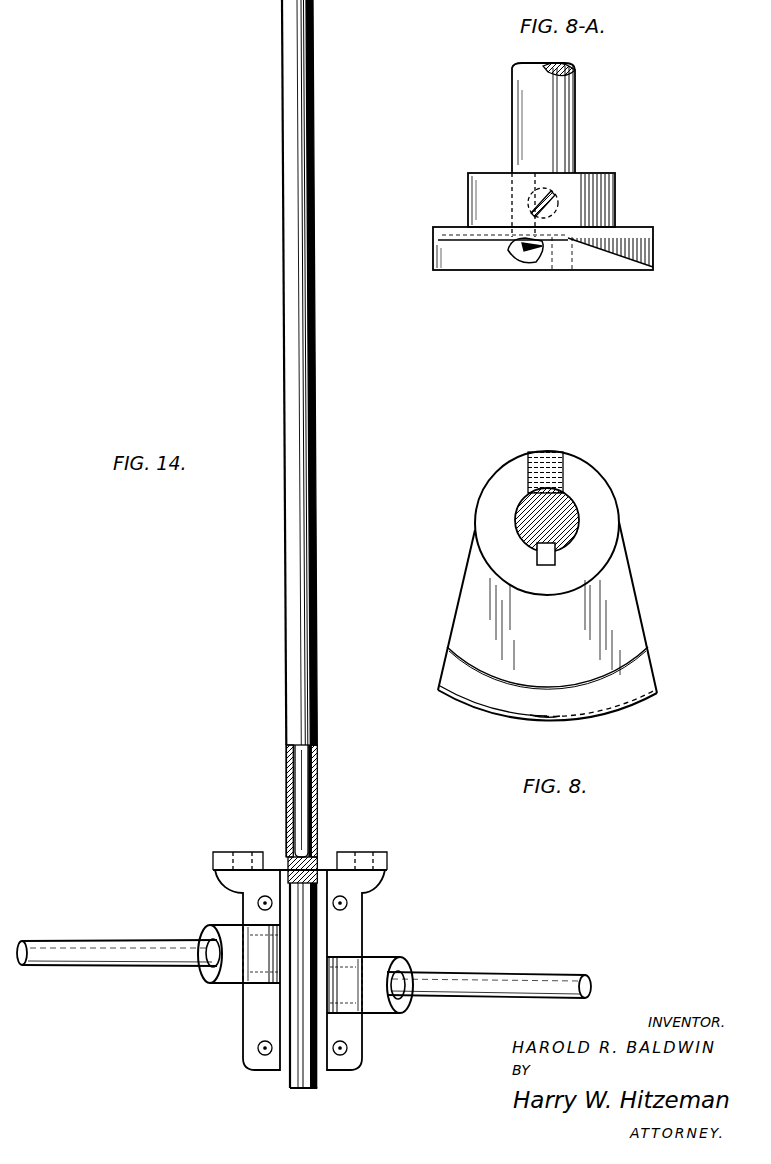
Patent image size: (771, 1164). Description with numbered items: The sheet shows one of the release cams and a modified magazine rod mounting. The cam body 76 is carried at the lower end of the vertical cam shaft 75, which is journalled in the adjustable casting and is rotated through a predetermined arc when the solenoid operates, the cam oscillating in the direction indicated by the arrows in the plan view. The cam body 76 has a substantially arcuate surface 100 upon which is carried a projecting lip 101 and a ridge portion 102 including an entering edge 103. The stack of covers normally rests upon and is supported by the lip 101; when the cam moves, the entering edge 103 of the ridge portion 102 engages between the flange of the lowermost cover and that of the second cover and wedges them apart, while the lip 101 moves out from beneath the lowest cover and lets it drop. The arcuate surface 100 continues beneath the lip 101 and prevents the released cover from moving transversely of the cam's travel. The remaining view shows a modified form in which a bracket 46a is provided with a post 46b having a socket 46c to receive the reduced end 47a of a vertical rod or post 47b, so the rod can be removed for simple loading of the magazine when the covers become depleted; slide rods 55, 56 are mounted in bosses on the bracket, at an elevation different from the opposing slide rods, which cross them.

In FIG. 14, the vertical rod or post 47b is at (305, 627).
In FIG. 14, the reduced end 47a is at (303, 775).
In FIG. 14, the bracket 46a is at (353, 930).
In FIG. 14, the post 46b is at (318, 810).
In FIG. 14, the socket 46c is at (290, 795).
In FIG. 14, the slide rod 55 is at (100, 960).
In FIG. 14, the slide rod 56 is at (507, 978).
In FIG. 8-A, the vertical cam shaft 75 is at (573, 104).
In FIG. 8, the vertical cam shaft 75 is at (567, 522).
In FIG. 8, the cam body 76 is at (617, 595).
In FIG. 8-A, the arcuate surface 100 is at (465, 262).
In FIG. 8, the arcuate surface 100 is at (478, 715).
In FIG. 8-A, the projecting lip 101 is at (515, 242).
In FIG. 8, the projecting lip 101 is at (517, 715).
In FIG. 8-A, the ridge portion 102 is at (565, 238).
In FIG. 8, the ridge portion 102 is at (592, 718).
In FIG. 8-A, the entering edge 103 is at (545, 228).
In FIG. 8, the entering edge 103 is at (557, 723).